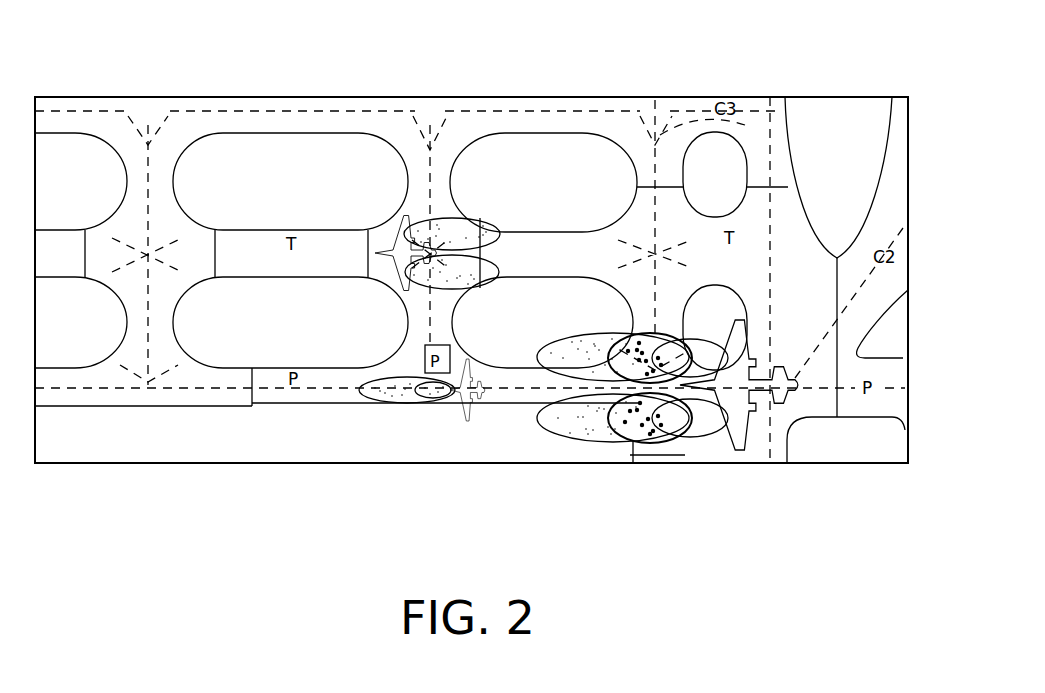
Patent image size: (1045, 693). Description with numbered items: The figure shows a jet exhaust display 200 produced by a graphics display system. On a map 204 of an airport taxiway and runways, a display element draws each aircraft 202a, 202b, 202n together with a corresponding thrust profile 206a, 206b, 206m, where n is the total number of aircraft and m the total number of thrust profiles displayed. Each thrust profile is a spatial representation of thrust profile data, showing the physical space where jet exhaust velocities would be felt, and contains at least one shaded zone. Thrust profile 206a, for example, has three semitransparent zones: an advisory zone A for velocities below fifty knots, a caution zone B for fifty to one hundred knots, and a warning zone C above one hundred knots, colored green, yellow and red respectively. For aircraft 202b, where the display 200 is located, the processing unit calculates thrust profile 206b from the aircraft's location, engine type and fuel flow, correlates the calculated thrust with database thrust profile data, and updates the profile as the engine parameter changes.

The jet exhaust display 200 is at (148, 487).
The aircraft 202a is at (725, 462).
The aircraft 202b is at (468, 400).
The aircraft 202n is at (397, 247).
The map 204 is at (880, 187).
The thrust profile 206a is at (582, 438).
The thrust profile 206b is at (373, 404).
The thrust profile 206m is at (487, 237).